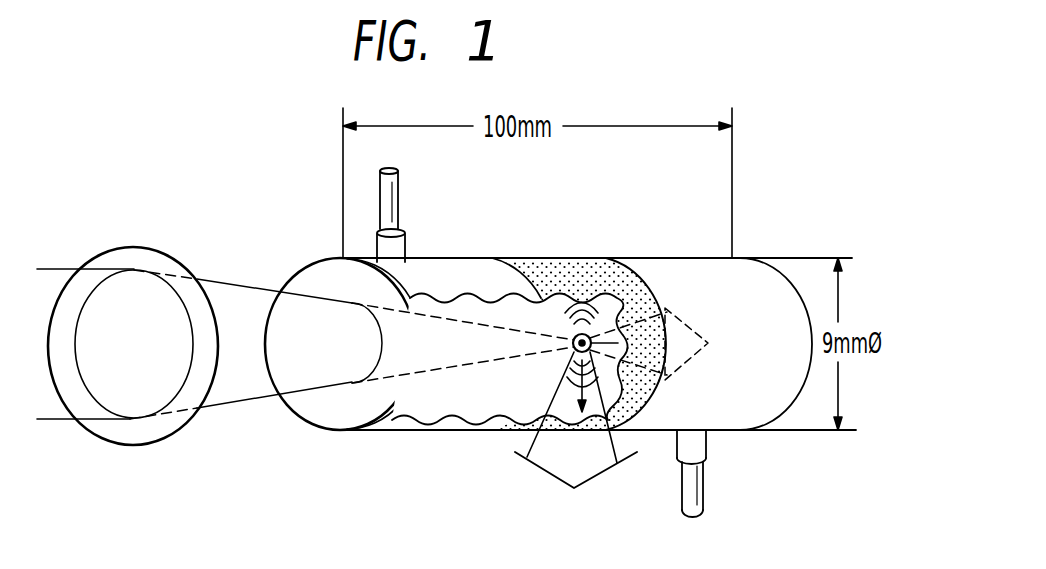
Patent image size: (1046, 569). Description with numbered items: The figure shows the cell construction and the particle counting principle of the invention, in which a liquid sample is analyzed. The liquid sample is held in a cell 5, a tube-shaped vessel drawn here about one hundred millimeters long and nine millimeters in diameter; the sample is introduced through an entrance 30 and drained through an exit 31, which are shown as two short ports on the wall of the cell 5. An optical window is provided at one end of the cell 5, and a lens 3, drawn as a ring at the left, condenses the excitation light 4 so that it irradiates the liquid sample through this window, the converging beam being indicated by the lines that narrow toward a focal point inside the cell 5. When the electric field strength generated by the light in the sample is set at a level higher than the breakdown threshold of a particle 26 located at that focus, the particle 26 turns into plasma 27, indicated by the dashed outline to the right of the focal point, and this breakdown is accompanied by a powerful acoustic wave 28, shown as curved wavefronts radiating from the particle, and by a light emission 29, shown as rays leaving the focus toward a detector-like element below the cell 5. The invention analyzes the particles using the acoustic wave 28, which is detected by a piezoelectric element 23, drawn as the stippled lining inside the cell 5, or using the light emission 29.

The lens 3 is at (137, 247).
The excited light 4 is at (235, 295).
The cell 5 is at (697, 259).
The piezoelectric element 23 is at (549, 262).
The particle 26 is at (590, 337).
The plasma 27 is at (672, 358).
The acoustic wave 28 is at (627, 402).
The light emission 29 is at (607, 470).
The entrance 30 is at (706, 478).
The exit 31 is at (400, 183).